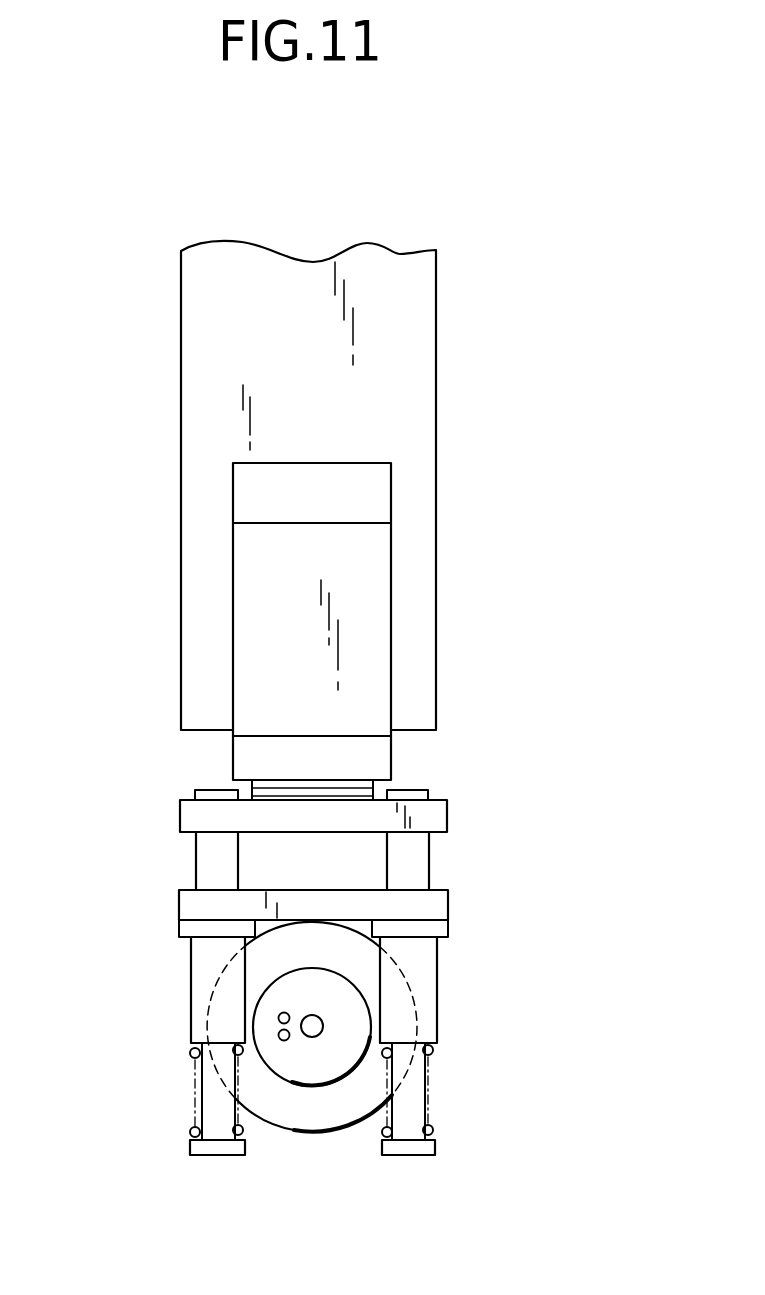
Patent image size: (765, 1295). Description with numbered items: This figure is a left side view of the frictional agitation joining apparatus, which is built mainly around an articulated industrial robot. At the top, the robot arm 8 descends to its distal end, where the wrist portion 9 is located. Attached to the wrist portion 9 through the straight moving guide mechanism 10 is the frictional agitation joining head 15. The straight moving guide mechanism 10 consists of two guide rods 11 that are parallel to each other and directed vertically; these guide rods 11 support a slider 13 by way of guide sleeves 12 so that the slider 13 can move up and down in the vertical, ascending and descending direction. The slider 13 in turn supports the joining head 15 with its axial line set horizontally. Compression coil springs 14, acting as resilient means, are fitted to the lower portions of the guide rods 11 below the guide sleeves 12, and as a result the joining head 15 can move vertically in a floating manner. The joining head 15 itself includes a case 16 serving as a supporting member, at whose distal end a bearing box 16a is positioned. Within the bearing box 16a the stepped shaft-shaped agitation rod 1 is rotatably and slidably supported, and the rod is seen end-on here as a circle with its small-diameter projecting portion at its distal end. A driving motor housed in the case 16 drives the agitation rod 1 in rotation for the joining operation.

The agitation rod 1 is at (315, 1025).
The robot arm 8 is at (421, 400).
The wrist portion 9 is at (246, 760).
The straight moving guide mechanism 10 is at (186, 876).
The guide rods 11 is at (197, 856).
The guide sleeves 12 is at (196, 962).
The slider 13 is at (450, 912).
The compression coil springs 14 is at (192, 1052).
The frictional agitation joining head 15 is at (273, 1136).
The case 16 is at (303, 1135).
The bearing box 16a is at (323, 1088).